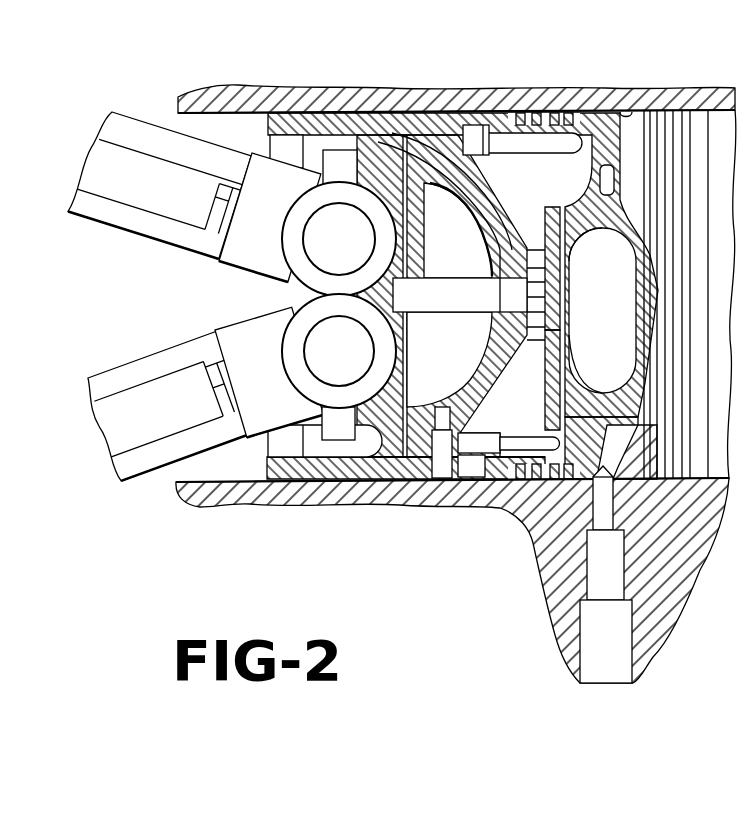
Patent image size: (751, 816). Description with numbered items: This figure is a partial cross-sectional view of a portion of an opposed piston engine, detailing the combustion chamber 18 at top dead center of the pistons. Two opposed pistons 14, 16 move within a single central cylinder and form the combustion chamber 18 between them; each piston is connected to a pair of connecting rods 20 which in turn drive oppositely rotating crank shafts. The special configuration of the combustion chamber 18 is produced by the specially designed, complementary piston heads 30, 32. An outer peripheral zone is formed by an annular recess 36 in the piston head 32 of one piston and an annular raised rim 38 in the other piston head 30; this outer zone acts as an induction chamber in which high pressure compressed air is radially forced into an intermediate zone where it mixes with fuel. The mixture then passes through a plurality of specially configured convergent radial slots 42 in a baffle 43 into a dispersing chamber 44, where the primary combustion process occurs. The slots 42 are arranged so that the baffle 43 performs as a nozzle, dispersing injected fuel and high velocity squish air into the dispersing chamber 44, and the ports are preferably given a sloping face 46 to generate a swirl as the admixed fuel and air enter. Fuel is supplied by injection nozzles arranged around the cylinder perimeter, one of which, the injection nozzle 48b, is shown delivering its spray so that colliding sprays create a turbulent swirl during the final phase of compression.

The piston 14 is at (404, 114).
The piston 16 is at (690, 120).
The combustion chamber 18 is at (560, 232).
The connecting rods 20 is at (158, 230).
The piston head 30 is at (533, 520).
The piston head 32 is at (643, 479).
The annular recess 36 is at (598, 122).
The annular raised rim 38 is at (614, 185).
The convergent radial slots 42 is at (545, 384).
The baffle 43 is at (571, 260).
The dispersing chamber 44 is at (626, 315).
The sloping face 46 is at (583, 358).
The injection nozzle 48b is at (592, 577).